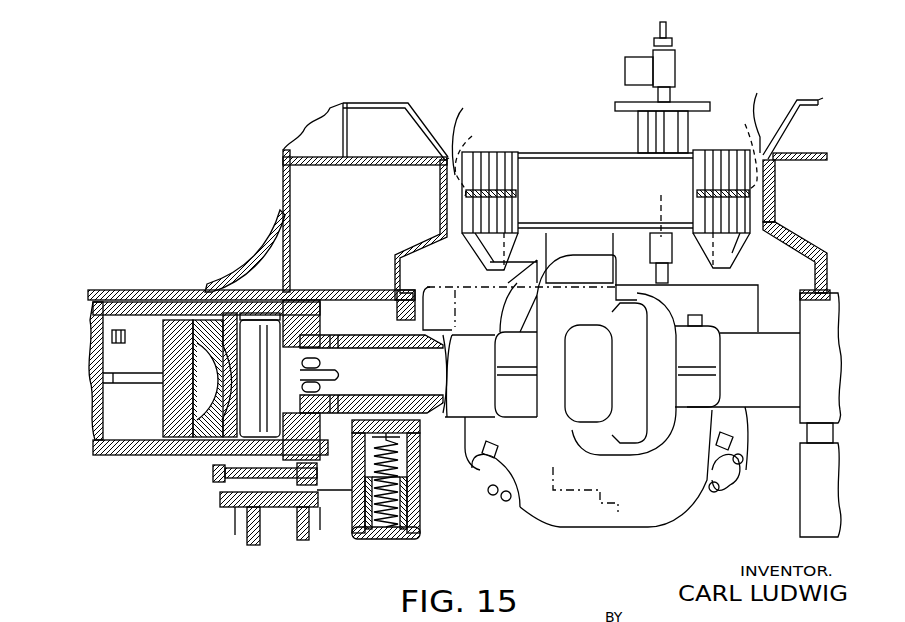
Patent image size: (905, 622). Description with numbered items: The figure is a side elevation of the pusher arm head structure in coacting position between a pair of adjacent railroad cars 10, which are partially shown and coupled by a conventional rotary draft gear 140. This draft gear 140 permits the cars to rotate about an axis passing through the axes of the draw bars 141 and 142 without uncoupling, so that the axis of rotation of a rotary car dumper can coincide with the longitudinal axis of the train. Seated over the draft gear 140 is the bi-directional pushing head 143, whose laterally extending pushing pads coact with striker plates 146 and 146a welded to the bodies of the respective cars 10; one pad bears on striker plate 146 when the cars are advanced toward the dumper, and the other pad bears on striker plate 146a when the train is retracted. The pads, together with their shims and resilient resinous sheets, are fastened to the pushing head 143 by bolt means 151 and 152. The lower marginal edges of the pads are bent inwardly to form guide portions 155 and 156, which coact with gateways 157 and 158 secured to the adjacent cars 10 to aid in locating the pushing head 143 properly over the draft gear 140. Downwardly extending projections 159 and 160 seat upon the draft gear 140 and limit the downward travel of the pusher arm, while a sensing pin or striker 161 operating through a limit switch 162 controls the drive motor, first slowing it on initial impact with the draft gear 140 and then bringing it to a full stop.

The railroad cars 10 is at (280, 180).
The rotary draft gear 140 is at (672, 525).
The draw bar 141 is at (457, 420).
The draw bar 142 is at (772, 410).
The pushing head 143 is at (580, 165).
The striker plate 146 is at (471, 131).
The striker plate 146a is at (770, 113).
The bolt means 151 is at (477, 156).
The bolt means 152 is at (739, 146).
The guide portion 155 is at (480, 258).
The guide portion 156 is at (740, 250).
The gateway 157 is at (437, 106).
The gateway 158 is at (798, 97).
The downwardly extending projection 159 is at (548, 250).
The downwardly extending projection 160 is at (670, 237).
The sensing pin or striker 161 is at (656, 272).
The limit switch 162 is at (667, 72).